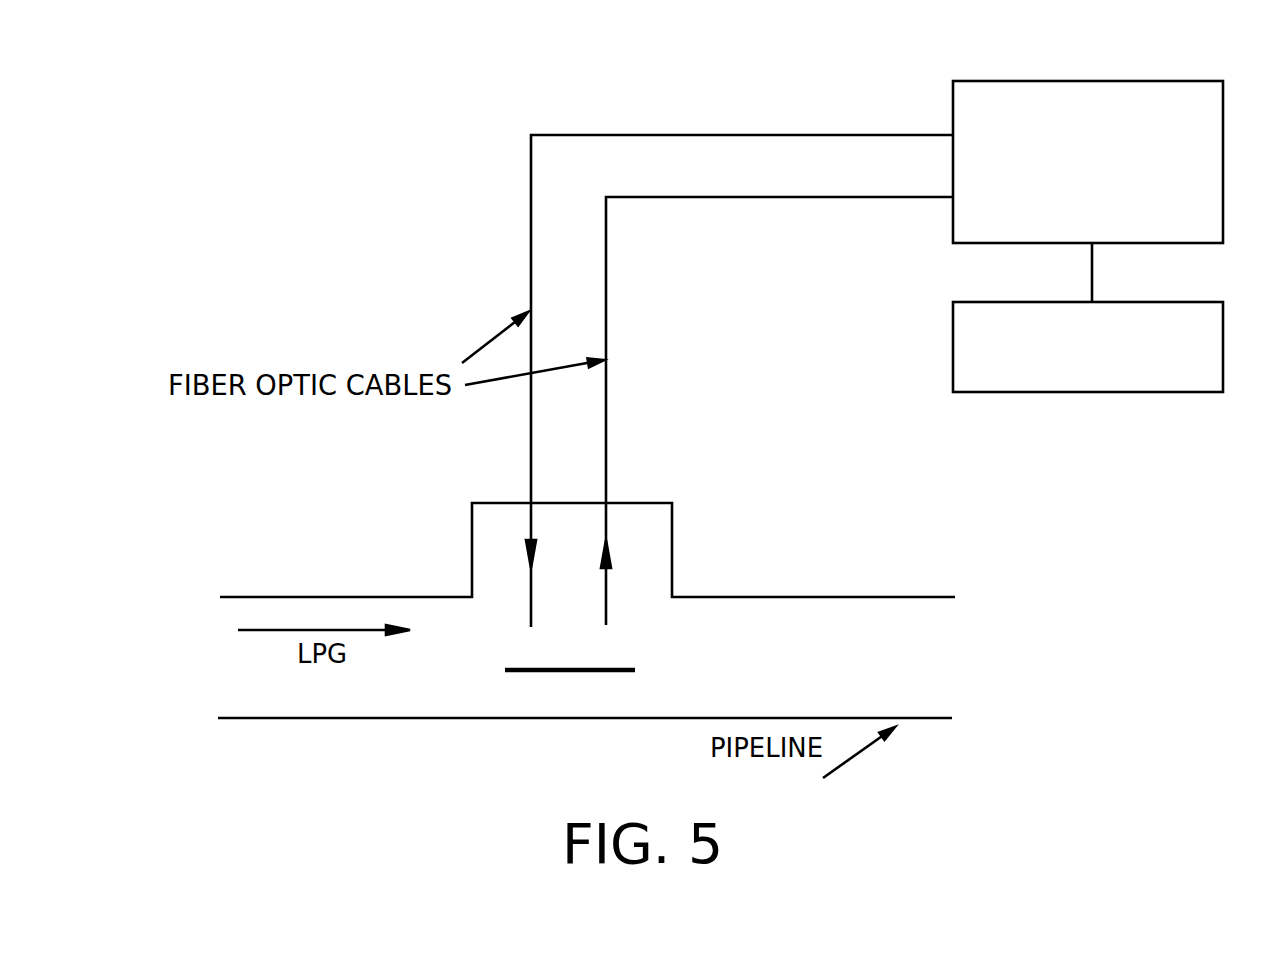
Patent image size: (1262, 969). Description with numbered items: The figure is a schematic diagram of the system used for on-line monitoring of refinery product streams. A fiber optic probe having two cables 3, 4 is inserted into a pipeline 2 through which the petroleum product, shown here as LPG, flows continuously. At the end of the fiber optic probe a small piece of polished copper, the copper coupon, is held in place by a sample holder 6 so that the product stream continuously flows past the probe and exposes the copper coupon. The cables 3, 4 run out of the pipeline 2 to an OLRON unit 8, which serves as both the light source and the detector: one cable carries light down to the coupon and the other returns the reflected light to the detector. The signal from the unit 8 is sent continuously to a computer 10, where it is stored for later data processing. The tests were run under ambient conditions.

The pipeline 2 is at (432, 718).
The fiber optic cable 3 is at (531, 183).
The fiber optic cable 4 is at (606, 302).
The sample holder 6 is at (605, 669).
The OLRON unit 8 is at (1137, 100).
The computer 10 is at (1152, 300).